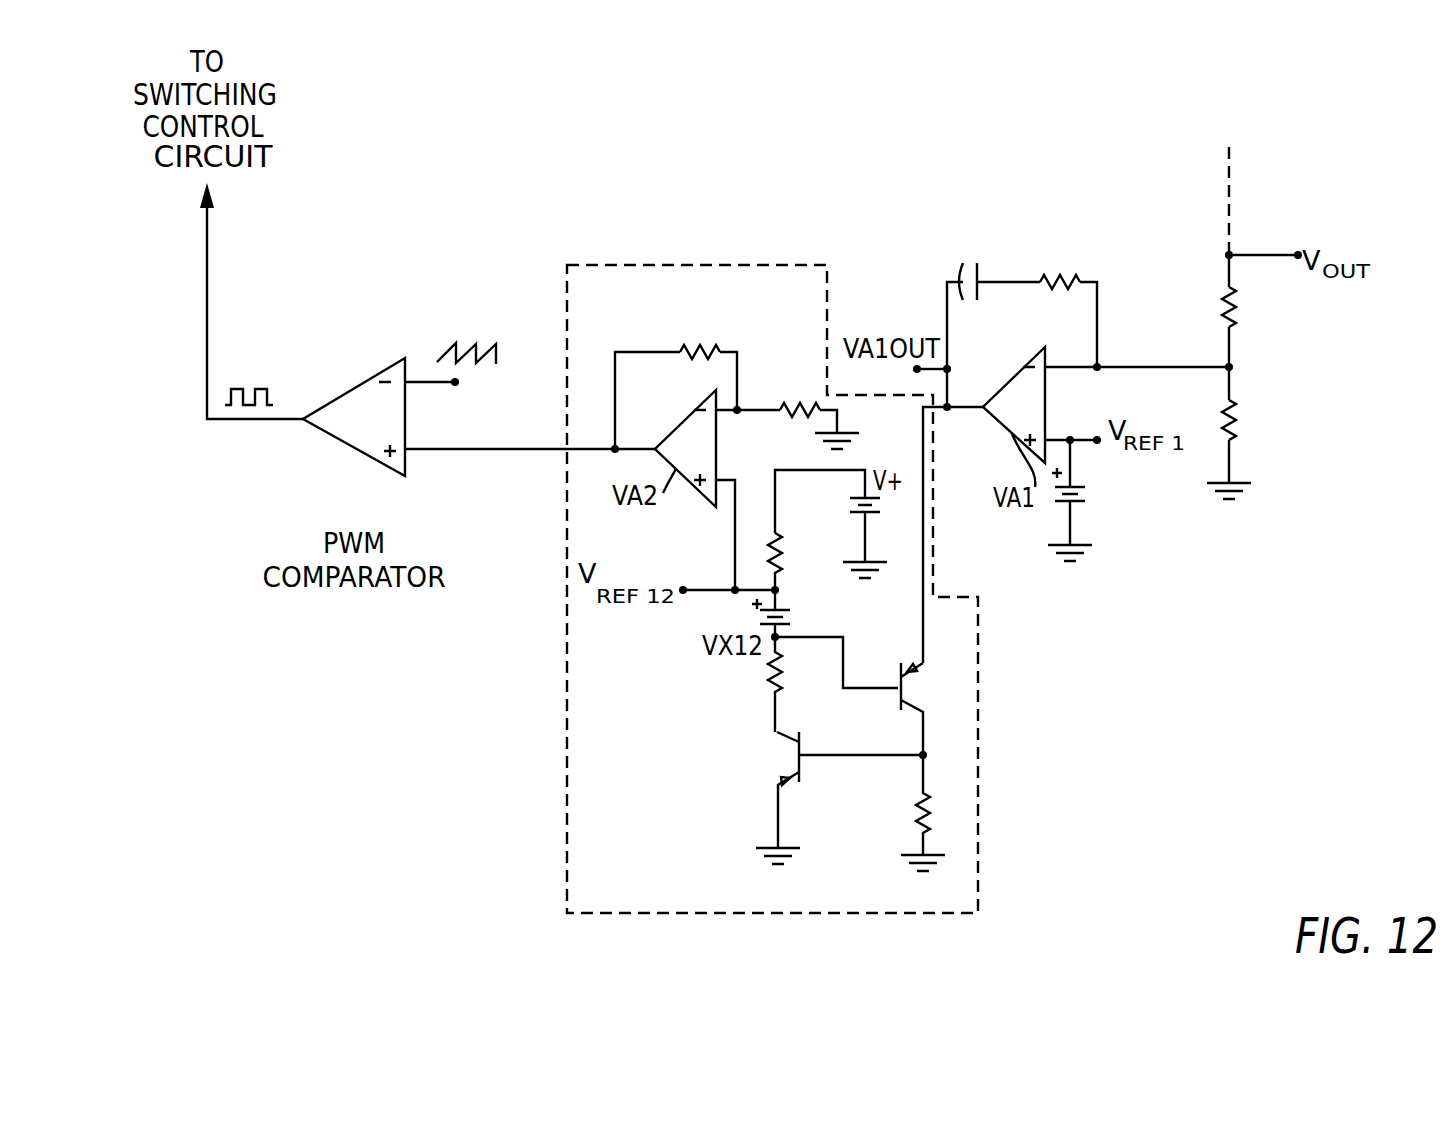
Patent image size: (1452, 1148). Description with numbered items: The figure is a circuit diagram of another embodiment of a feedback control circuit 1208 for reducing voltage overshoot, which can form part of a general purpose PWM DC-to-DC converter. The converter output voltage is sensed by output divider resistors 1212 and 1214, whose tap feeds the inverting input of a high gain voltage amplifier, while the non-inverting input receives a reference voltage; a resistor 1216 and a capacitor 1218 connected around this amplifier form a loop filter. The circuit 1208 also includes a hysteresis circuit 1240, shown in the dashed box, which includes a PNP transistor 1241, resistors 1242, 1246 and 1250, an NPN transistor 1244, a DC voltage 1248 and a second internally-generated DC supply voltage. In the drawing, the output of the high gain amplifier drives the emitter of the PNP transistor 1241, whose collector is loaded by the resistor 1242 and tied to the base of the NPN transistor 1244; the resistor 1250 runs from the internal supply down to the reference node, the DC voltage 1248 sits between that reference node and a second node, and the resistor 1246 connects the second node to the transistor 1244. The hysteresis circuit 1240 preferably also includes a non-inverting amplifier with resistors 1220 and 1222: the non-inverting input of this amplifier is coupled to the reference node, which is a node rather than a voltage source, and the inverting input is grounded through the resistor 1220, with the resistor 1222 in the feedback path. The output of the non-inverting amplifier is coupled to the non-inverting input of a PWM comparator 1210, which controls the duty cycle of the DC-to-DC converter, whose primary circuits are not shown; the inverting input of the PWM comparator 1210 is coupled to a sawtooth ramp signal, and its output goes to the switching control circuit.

The feedback control circuit 1208 is at (1140, 790).
The PWM comparator 1210 is at (325, 431).
The output divider resistor 1212 is at (1240, 312).
The output divider resistor 1214 is at (1240, 420).
The resistor 1216 is at (1078, 265).
The capacitor 1218 is at (966, 262).
The resistor 1220 is at (800, 402).
The resistor 1222 is at (697, 345).
The hysteresis circuit 1240 is at (980, 698).
The PNP transistor 1241 is at (915, 705).
The resistor 1242 is at (922, 822).
The NPN transistor 1244 is at (788, 738).
The resistor 1246 is at (773, 672).
The DC voltage 1248 is at (792, 607).
The resistor 1250 is at (777, 545).